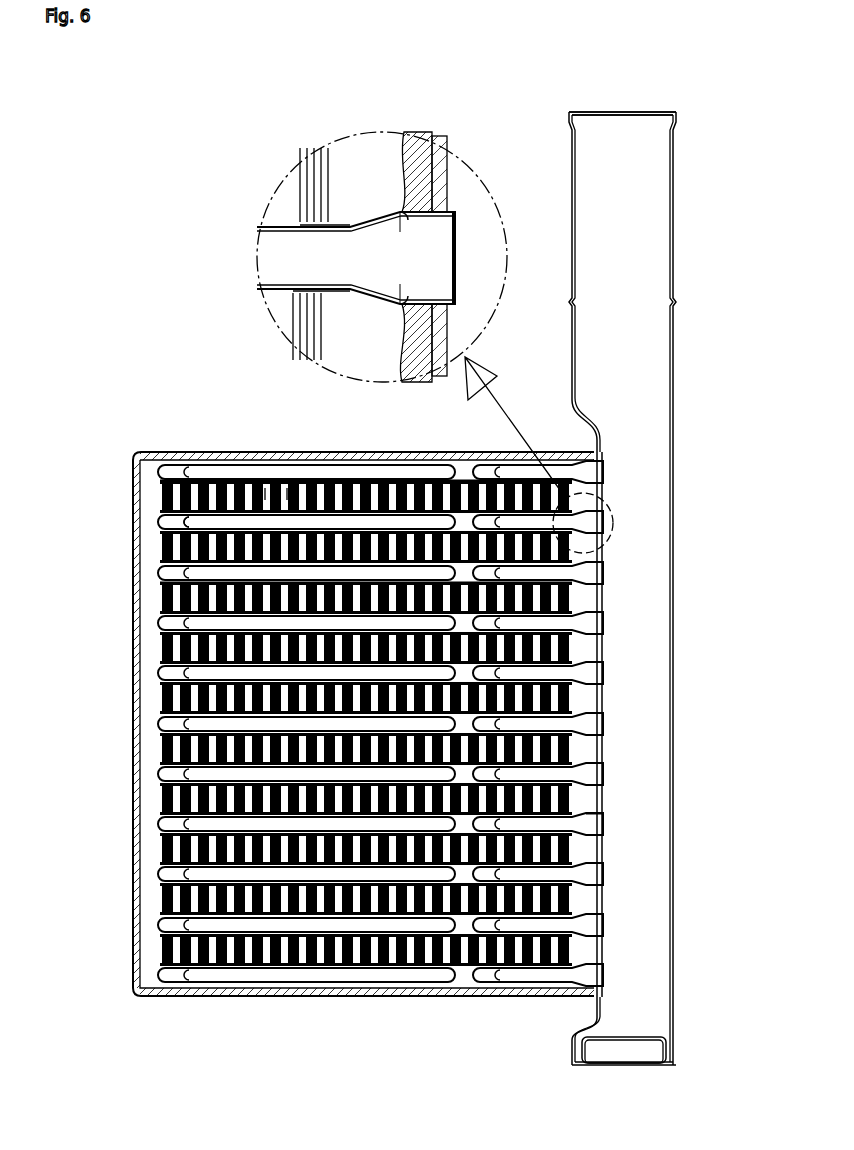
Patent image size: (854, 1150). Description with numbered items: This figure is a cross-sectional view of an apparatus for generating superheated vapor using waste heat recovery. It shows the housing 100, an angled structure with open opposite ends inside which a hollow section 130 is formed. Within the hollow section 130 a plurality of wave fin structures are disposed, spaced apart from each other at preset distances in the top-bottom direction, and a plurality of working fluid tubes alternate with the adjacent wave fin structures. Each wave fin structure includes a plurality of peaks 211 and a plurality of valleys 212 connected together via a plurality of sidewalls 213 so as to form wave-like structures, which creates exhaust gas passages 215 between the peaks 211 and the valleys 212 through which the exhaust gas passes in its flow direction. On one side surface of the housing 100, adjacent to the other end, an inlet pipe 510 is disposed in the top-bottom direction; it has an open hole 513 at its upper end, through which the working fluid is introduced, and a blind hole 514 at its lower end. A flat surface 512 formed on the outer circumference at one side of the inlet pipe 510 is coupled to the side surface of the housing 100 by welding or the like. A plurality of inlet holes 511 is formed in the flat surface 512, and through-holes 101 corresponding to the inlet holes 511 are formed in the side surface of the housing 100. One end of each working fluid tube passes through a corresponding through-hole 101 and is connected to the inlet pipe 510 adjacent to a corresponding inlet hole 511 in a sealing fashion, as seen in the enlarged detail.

The housing 100 is at (385, 698).
The through-holes 101 is at (392, 210).
The hollow section 130 is at (146, 547).
The peaks 211 is at (212, 478).
The valleys 212 is at (183, 500).
The sidewalls 213 is at (163, 470).
The exhaust gas passages 215 is at (266, 498).
The inlet pipe 510 is at (675, 380).
The inlet holes 511 is at (456, 214).
The flat surface 512 is at (430, 185).
The open hole 513 is at (624, 128).
The blind hole 514 is at (610, 1042).